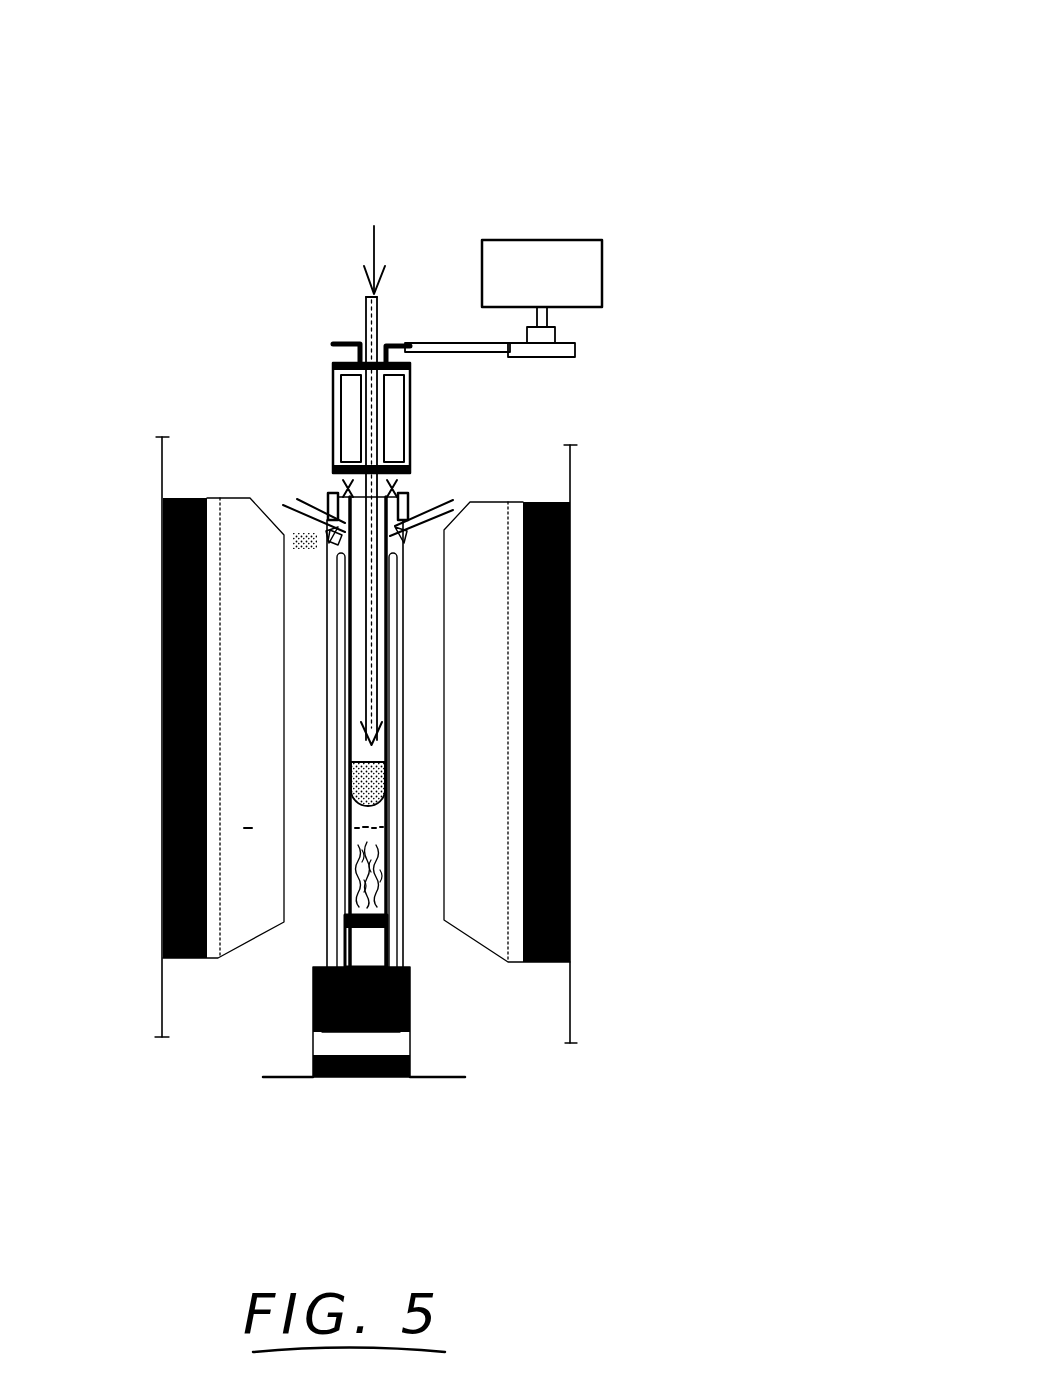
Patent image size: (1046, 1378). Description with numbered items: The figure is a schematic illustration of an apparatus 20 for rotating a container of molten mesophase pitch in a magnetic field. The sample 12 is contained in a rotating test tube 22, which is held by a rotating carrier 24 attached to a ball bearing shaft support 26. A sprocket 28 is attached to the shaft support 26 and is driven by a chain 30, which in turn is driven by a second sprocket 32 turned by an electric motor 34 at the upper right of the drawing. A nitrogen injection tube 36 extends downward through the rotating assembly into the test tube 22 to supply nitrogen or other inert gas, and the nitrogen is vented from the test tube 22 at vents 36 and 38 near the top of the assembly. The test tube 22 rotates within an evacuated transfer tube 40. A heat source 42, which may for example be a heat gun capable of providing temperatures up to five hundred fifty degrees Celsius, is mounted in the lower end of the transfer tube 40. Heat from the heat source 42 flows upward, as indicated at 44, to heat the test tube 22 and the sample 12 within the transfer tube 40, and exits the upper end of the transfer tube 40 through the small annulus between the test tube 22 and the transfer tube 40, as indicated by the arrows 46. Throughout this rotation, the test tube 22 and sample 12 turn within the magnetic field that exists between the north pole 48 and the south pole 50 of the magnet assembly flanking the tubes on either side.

The apparatus 20 is at (577, 122).
The sample 12 is at (373, 777).
The rotating test tube 22 is at (403, 590).
The rotating carrier 24 is at (405, 489).
The ball bearing shaft support 26 is at (412, 397).
The sprocket 28 is at (343, 340).
The chain 30 is at (430, 343).
The second sprocket 32 is at (575, 348).
The electric motor 34 is at (605, 257).
The nitrogen injection tube 36 is at (366, 312).
The vent 38 is at (318, 528).
The evacuated transfer tube 40 is at (403, 917).
The heat source 42 is at (407, 1007).
The heat flow 44 is at (360, 880).
The arrows 46 is at (374, 510).
The north pole 48 is at (247, 762).
The south pole 50 is at (477, 778).